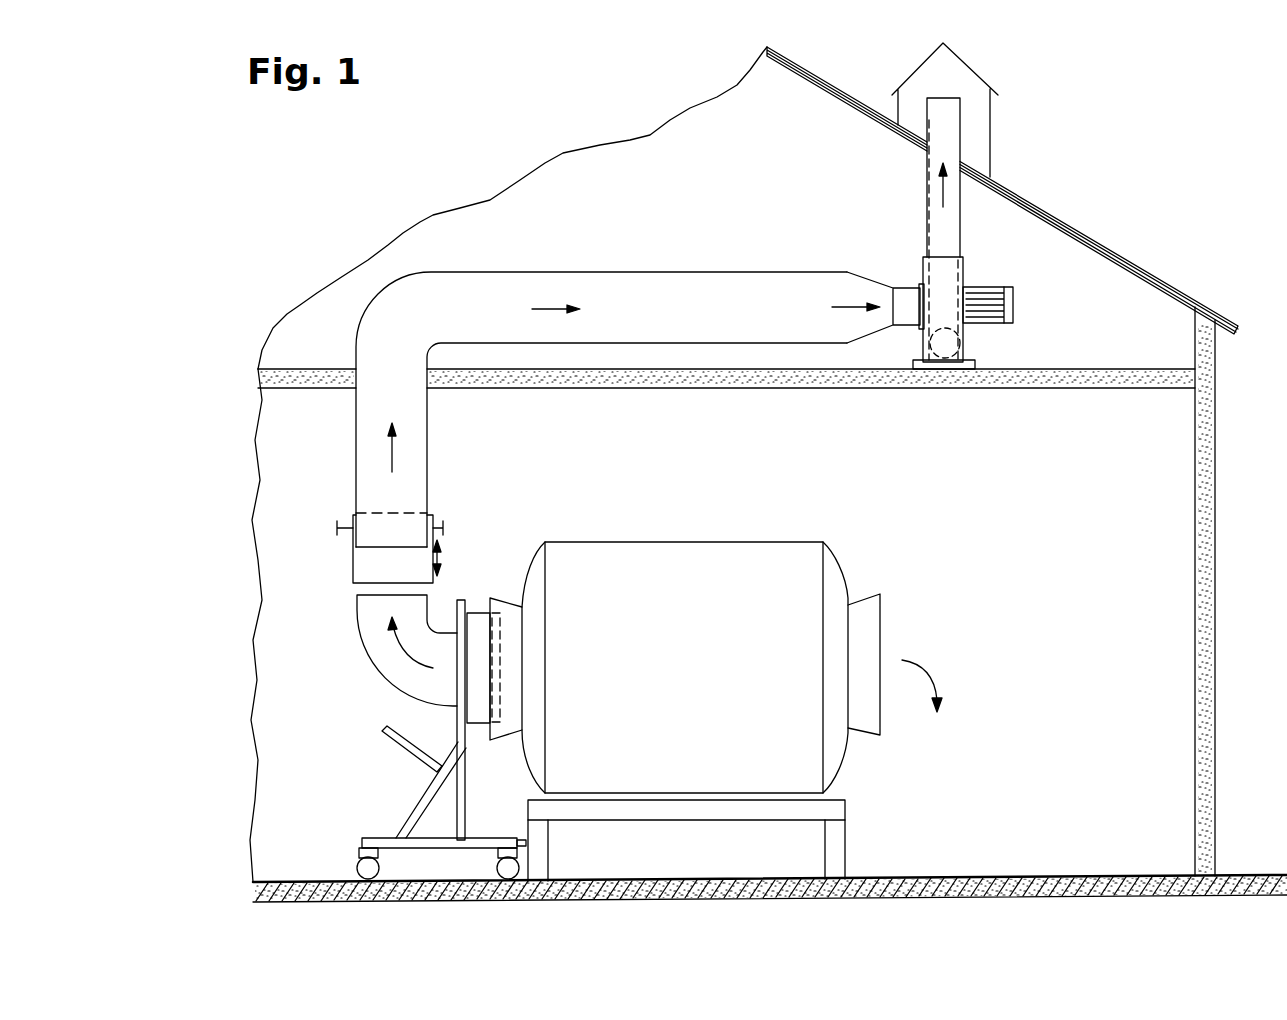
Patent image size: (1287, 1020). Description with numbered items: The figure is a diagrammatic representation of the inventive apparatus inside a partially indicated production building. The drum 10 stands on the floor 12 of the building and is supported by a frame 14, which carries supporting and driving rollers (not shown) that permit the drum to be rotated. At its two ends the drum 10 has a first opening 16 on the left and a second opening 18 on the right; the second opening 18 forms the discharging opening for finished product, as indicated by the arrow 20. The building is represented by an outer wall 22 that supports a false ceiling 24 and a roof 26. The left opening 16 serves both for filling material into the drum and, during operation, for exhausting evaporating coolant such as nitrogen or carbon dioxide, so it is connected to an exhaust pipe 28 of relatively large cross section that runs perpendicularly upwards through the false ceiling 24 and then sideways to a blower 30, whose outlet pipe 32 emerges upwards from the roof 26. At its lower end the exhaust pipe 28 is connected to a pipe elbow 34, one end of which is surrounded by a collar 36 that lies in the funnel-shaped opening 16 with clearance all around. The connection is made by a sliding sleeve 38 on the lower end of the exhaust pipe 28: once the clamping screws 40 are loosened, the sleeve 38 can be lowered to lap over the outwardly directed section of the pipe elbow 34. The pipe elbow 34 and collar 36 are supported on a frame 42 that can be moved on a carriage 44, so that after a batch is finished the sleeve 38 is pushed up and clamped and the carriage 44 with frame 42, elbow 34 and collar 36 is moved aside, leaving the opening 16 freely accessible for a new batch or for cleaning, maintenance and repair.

The drum 10 is at (830, 560).
The floor 12 is at (983, 876).
The frame 14 is at (832, 803).
The first opening 16 is at (487, 604).
The second opening 18 is at (887, 610).
The arrow 20 is at (932, 672).
The outer wall 22 is at (1213, 560).
The false ceiling 24 is at (1098, 372).
The roof 26 is at (1158, 278).
The exhaust pipe 28 is at (418, 448).
The blower 30 is at (995, 300).
The outlet pipe 32 is at (932, 222).
The pipe elbow 34 is at (390, 660).
The collar 36 is at (480, 697).
The sliding sleeve 38 is at (353, 560).
The clamping screws 40 is at (337, 530).
The frame 42 is at (422, 798).
The carriage 44 is at (365, 840).